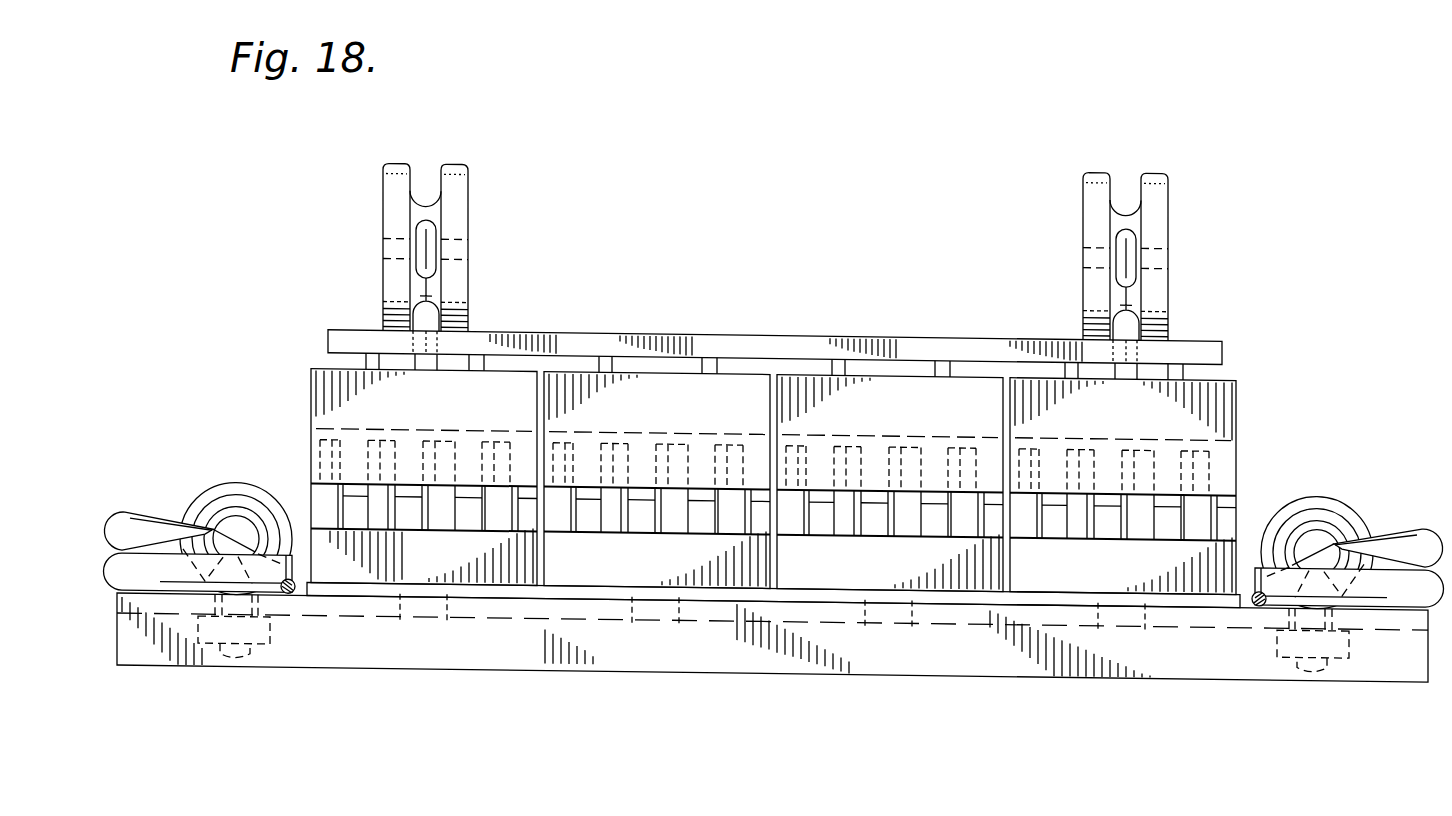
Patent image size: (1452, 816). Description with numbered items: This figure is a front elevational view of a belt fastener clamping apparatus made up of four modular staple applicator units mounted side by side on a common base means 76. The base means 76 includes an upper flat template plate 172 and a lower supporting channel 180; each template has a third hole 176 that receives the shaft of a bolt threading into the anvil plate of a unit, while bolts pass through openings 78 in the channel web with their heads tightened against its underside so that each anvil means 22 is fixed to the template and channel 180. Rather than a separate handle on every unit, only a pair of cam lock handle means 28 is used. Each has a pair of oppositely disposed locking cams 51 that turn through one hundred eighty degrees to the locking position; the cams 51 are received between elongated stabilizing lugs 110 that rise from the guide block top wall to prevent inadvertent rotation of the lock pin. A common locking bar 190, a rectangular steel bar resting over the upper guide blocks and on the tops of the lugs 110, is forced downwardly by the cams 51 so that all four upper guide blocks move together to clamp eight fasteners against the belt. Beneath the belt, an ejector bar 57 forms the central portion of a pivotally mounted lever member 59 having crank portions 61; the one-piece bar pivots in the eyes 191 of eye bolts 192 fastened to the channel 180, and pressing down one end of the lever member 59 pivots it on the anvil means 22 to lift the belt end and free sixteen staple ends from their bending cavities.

The anvil means 22 is at (345, 647).
The cam lock means 28 is at (483, 254).
The locking cams 51 is at (455, 197).
The bar 57 is at (143, 562).
The lever member 59 is at (117, 499).
The crank portions 61 is at (178, 512).
The base means 76 is at (1182, 646).
The openings 78 is at (450, 608).
The stabilizing lugs 110 is at (368, 357).
The template plate 172 is at (478, 558).
The third hole 176 is at (630, 588).
The lower supporting channel 180 is at (840, 666).
The common locking bar 190 is at (680, 332).
The eyes 191 is at (228, 483).
The eye bolts 192 is at (290, 494).